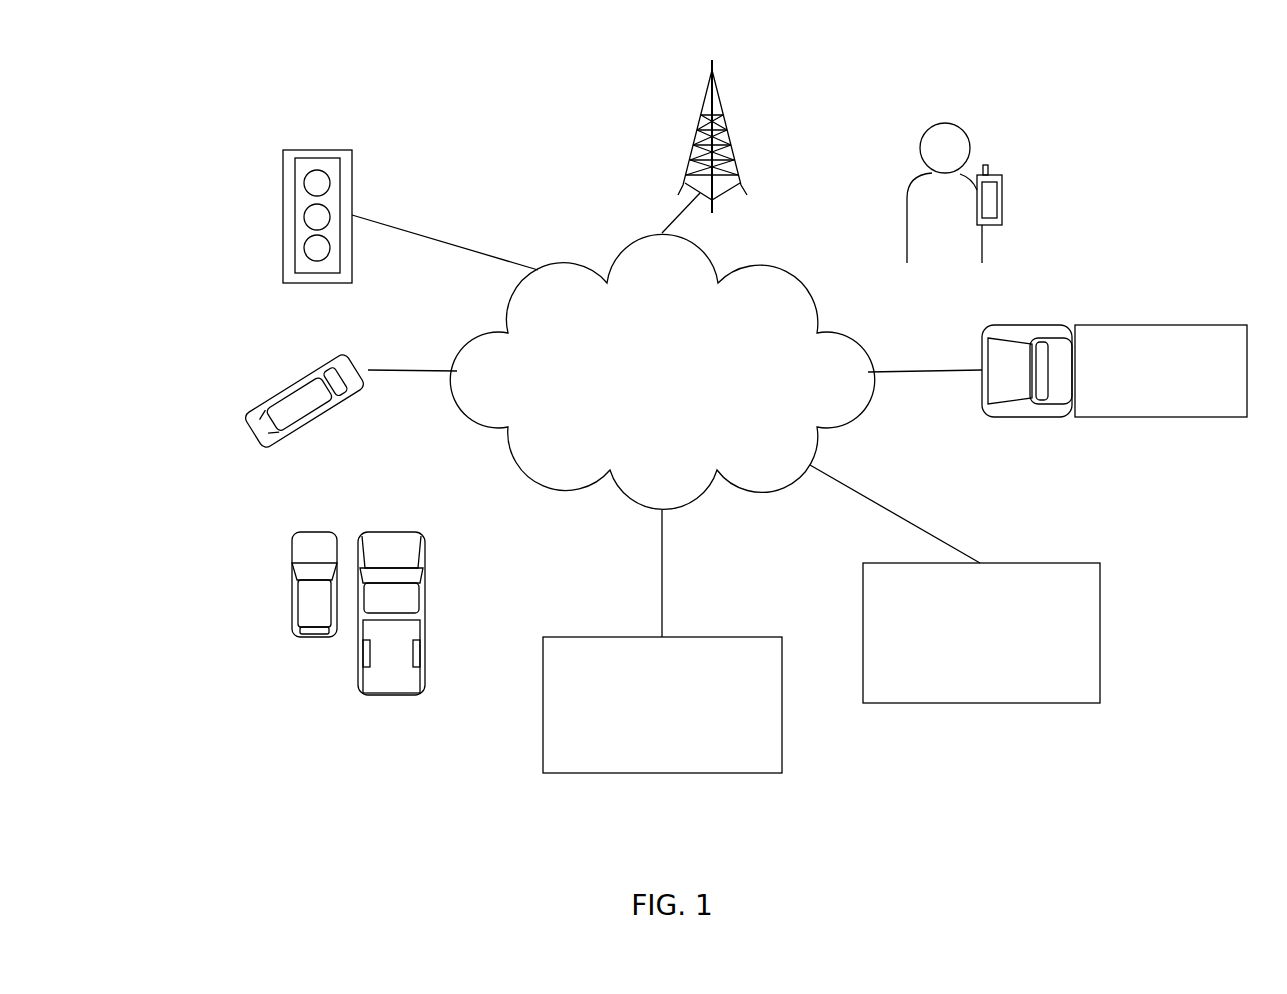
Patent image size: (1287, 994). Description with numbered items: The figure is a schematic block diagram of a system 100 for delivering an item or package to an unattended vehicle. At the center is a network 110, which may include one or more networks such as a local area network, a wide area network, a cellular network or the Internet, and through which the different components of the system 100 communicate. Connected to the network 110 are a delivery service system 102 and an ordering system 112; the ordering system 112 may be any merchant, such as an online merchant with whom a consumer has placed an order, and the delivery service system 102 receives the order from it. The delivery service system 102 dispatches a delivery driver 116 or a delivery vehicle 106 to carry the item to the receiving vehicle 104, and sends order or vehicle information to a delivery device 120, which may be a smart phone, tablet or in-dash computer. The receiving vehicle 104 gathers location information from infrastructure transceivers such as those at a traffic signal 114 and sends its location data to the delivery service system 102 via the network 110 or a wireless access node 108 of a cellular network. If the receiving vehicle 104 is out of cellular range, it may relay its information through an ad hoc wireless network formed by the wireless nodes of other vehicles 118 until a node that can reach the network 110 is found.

The system 100 is at (228, 85).
The delivery service system 102 is at (645, 746).
The receiving vehicle 104 is at (242, 437).
The delivery vehicle 106 is at (1215, 325).
The wireless access node 108 is at (693, 150).
The network 110 is at (644, 404).
The ordering system 112 is at (964, 659).
The traffic signal 114 is at (283, 192).
The delivery driver 116 is at (944, 122).
The other vehicles 118 is at (358, 648).
The delivery device 120 is at (1005, 200).